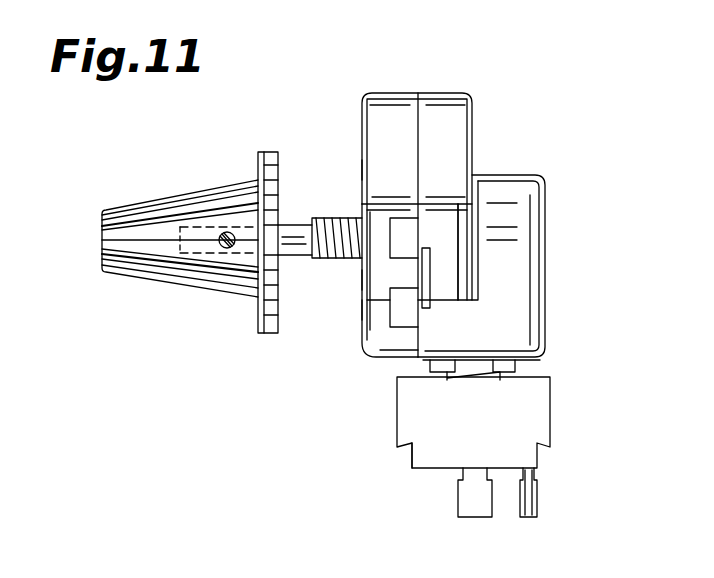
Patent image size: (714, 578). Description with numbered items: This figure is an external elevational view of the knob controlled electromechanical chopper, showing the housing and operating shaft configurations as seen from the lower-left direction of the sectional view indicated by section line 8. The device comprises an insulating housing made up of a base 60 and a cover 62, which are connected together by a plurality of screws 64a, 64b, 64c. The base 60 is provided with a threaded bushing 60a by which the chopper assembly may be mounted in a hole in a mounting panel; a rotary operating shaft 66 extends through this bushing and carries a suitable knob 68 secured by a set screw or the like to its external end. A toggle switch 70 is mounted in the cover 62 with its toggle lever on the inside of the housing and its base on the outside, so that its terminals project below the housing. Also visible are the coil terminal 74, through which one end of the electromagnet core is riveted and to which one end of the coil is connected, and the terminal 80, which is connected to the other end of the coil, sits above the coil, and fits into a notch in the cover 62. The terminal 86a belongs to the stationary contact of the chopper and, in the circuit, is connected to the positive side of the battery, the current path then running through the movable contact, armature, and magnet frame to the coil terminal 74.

The section line 8- 8 is at (375, 30).
The base 60 is at (385, 100).
The threaded bushing 60a is at (337, 218).
The cover 62 is at (448, 100).
The screw 64a is at (362, 178).
The screw 64b is at (358, 282).
The screw 64c is at (358, 306).
The rotary operating shaft 66 is at (293, 226).
The knob 68 is at (138, 215).
The toggle switch 70 is at (537, 397).
The coil terminal 74 is at (400, 315).
The terminal 80 is at (430, 283).
The terminal of stationary contact 86a is at (403, 243).